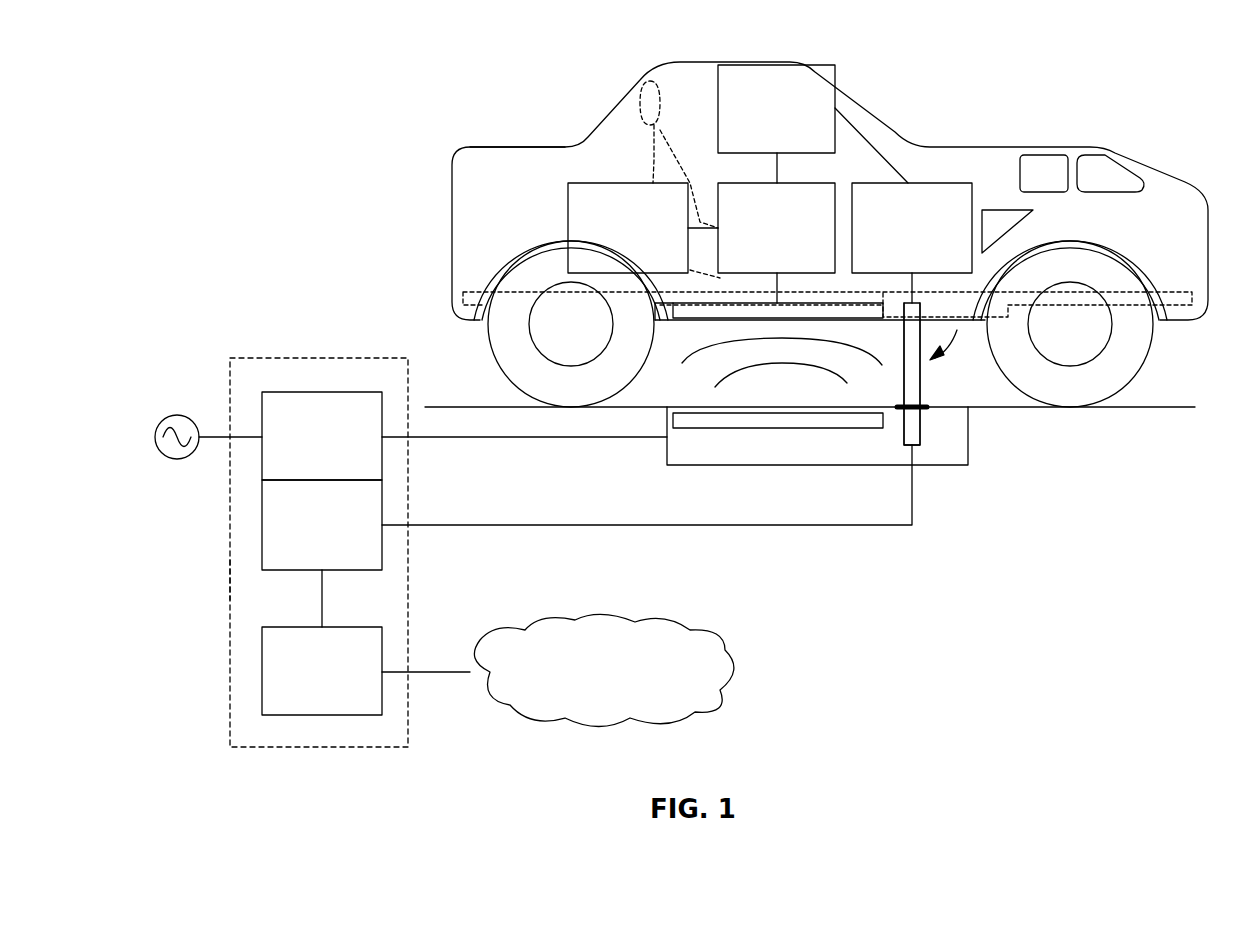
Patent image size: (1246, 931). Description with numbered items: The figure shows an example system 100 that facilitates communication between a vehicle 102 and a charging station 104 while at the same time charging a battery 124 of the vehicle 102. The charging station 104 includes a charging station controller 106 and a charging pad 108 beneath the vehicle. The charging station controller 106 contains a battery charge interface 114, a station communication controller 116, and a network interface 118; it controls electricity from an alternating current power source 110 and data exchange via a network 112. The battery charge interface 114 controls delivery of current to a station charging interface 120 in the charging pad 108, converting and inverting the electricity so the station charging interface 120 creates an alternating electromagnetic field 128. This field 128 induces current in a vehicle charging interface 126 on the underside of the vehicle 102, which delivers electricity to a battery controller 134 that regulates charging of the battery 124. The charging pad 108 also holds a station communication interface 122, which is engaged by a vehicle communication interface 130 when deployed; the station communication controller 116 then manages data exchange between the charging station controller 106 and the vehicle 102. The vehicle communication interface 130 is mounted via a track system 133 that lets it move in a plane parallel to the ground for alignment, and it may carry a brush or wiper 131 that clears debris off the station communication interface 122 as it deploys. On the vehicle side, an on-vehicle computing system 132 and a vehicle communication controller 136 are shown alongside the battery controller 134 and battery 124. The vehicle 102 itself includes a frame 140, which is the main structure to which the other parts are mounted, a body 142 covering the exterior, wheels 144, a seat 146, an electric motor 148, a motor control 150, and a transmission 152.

The system 100 is at (330, 73).
The vehicle 102 is at (566, 97).
The charging station 104 is at (272, 325).
The charging station controller 106 is at (230, 575).
The charging pad 108 is at (675, 465).
The alternating current power source 110 is at (172, 410).
The network 112 is at (604, 670).
The battery charge interface 114 is at (322, 436).
The station communication controller 116 is at (322, 553).
The network interface 118 is at (366, 671).
The station charging interface 120 is at (800, 428).
The station communication interface 122 is at (921, 425).
The battery 124 is at (643, 228).
The vehicle charging interface 126 is at (826, 320).
The alternating electromagnetic field 128 is at (704, 377).
The vehicle communication interface 130 is at (921, 375).
The brush or wiper 131 is at (898, 404).
The on-vehicle computing system 132 is at (813, 124).
The track system 133 is at (904, 322).
The battery controller 134 is at (776, 243).
The vehicle communication controller 136 is at (912, 243).
The frame 140 is at (463, 292).
The body 142 is at (500, 146).
The wheels 144 is at (497, 353).
The seat 146 is at (645, 78).
The electric motor 148 is at (1128, 165).
The motor control 150 is at (1042, 153).
The transmission 152 is at (1040, 218).